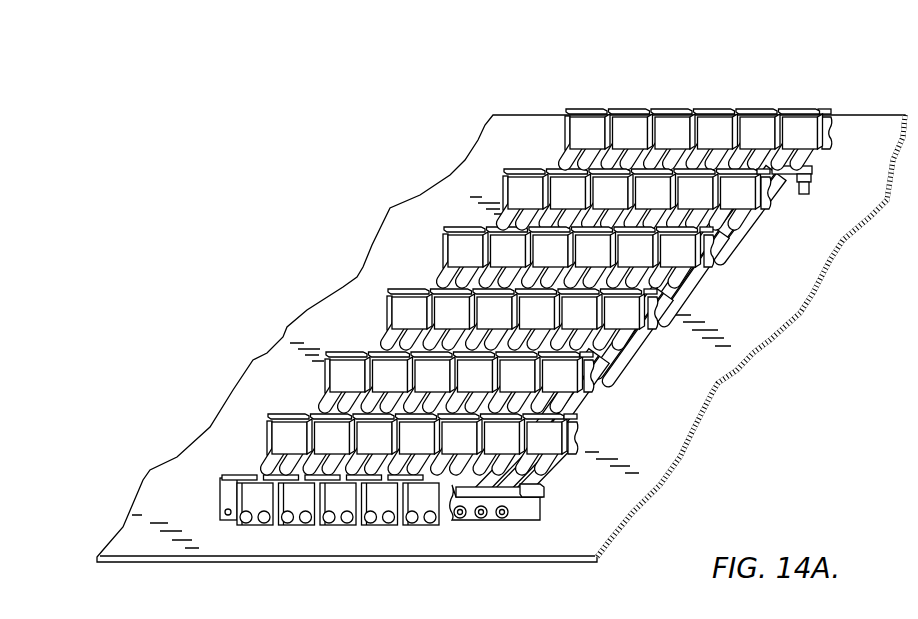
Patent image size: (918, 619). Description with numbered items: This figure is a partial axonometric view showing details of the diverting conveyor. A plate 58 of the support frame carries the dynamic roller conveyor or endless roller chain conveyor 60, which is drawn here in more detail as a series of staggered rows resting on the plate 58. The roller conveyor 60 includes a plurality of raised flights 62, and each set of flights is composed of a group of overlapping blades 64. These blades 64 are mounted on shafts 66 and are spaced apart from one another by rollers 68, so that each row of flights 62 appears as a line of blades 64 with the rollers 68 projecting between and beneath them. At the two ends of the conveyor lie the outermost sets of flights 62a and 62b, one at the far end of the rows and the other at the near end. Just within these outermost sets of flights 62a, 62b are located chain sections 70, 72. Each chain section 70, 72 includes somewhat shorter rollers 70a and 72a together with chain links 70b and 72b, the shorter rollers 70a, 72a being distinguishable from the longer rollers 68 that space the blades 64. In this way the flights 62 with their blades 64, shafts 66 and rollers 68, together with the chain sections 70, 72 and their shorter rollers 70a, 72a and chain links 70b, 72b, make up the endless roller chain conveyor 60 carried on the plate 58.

The plate 58 is at (338, 298).
The roller conveyor 60 is at (697, 103).
The raised flights 62 is at (520, 171).
The outermost set of flights 62a is at (784, 109).
The outermost set of flights 62b is at (220, 497).
The overlapping blades 64 is at (310, 414).
The shafts 66 is at (459, 518).
The rollers 68 is at (693, 298).
The chain section 70 is at (808, 193).
The shorter rollers 70a is at (813, 168).
The chain links 70b is at (811, 178).
The chain section 72 is at (532, 506).
The shorter rollers 72a is at (504, 518).
The chain links 72b is at (541, 491).